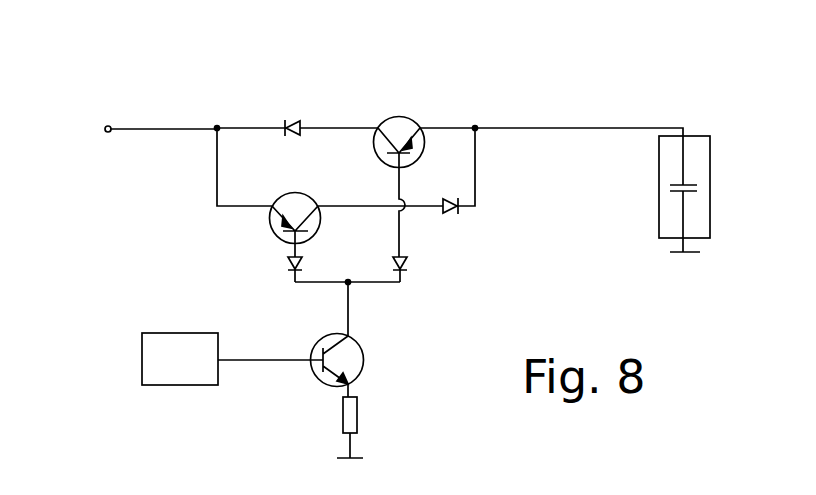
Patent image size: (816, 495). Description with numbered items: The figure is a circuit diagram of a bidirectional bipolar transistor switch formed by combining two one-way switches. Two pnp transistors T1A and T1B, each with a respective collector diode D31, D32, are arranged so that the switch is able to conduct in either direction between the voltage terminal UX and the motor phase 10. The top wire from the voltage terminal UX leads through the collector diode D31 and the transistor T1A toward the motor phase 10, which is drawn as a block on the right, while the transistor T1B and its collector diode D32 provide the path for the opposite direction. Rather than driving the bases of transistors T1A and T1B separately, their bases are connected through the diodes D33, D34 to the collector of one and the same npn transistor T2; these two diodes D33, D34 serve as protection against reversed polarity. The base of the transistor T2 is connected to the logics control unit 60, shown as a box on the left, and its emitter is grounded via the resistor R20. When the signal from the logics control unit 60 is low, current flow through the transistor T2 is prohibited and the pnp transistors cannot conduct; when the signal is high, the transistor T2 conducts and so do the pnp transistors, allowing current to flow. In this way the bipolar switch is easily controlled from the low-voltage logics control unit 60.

The motor phase 10 is at (703, 232).
The logics control unit 60 is at (183, 378).
The collector diode D31 is at (283, 112).
The collector diode D32 is at (475, 183).
The diode D33 is at (428, 267).
The diode D34 is at (267, 272).
The pnp transistor T1A is at (414, 172).
The pnp transistor T1B is at (328, 225).
The npn bipolar transistor T2 is at (356, 366).
The resistor R20 is at (373, 427).
The voltage terminal UX is at (161, 149).